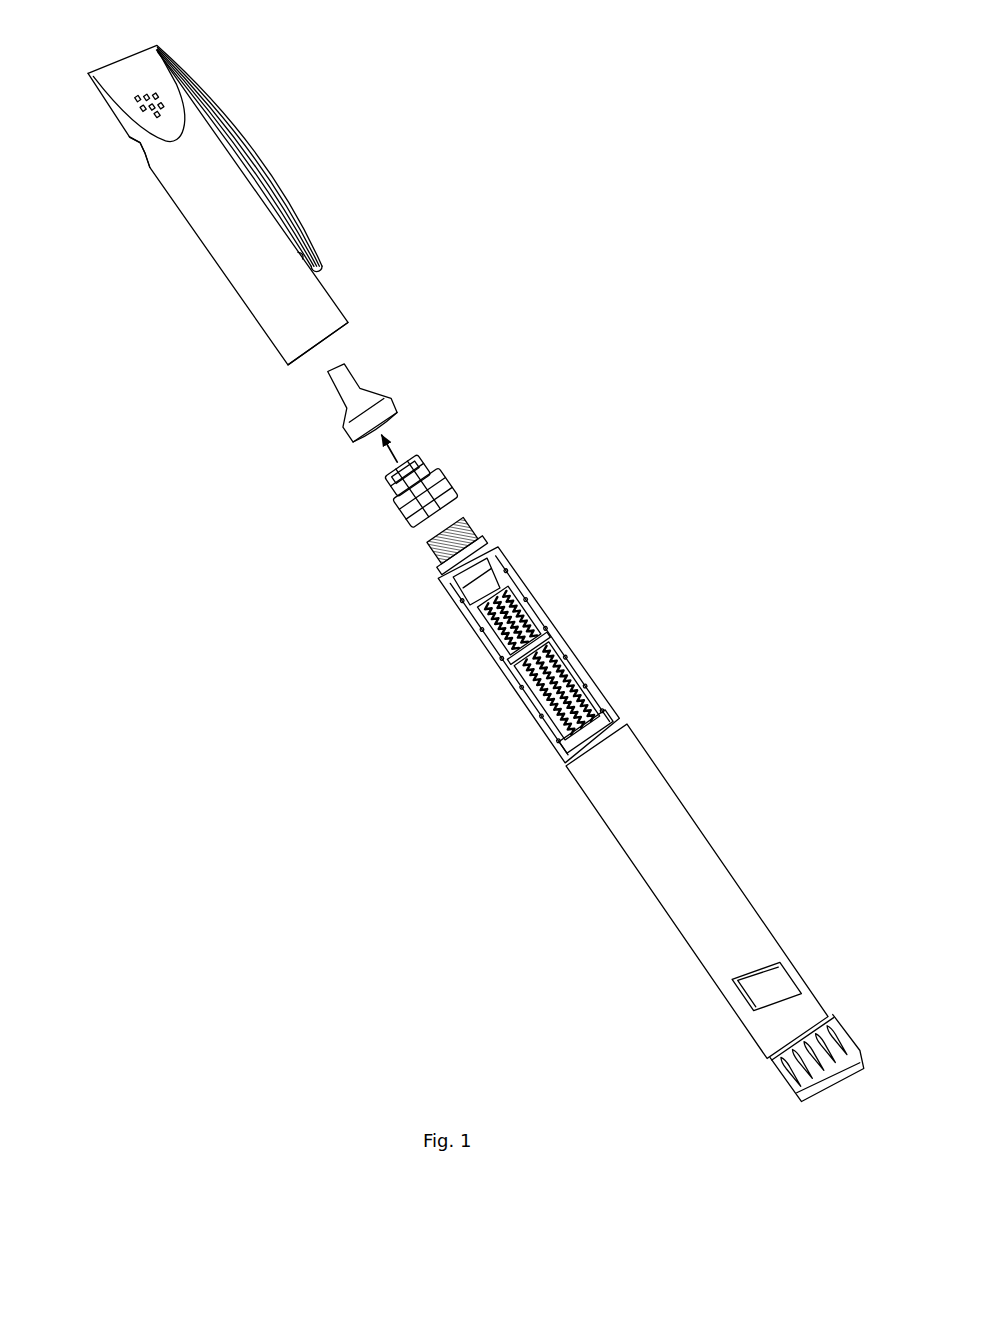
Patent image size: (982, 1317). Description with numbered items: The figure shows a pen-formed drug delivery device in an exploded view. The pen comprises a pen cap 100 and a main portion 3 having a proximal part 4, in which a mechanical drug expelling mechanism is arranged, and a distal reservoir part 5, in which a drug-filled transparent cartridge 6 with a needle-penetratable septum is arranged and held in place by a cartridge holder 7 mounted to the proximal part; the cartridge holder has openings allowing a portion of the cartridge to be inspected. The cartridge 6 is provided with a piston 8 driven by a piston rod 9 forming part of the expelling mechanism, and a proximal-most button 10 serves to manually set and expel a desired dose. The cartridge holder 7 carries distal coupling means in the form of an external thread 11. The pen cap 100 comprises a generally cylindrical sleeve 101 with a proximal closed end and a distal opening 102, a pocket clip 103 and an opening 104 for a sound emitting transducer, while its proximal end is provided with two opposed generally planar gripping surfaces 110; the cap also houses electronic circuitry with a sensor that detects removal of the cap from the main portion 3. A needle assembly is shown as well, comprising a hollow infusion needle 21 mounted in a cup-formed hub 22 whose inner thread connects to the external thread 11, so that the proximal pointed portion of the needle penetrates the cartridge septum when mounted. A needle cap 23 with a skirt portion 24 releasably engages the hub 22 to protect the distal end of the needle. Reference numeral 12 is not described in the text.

The pen cap 100 is at (264, 187).
The generally cylindrical sleeve 101 is at (230, 228).
The distal opening 102 is at (345, 333).
The pocket clip 103 is at (262, 162).
The opening for a sound emitting transducer 104 is at (137, 143).
The gripping surfaces 110 is at (130, 68).
The main portion 3 is at (691, 934).
The proximal part 4 is at (627, 855).
The distal reservoir part 5 is at (582, 657).
The cartridge 6 is at (483, 573).
The cartridge holder 7 is at (512, 670).
The piston 8 is at (475, 608).
The piston rod 9 is at (570, 713).
The button 10 is at (782, 1075).
The external thread 11 is at (438, 552).
The end piece 12 is at (593, 733).
The hollow infusion needle 21 is at (383, 448).
The hub 22 is at (450, 490).
The needle cap 23 is at (342, 382).
The skirt portion 24 is at (380, 413).